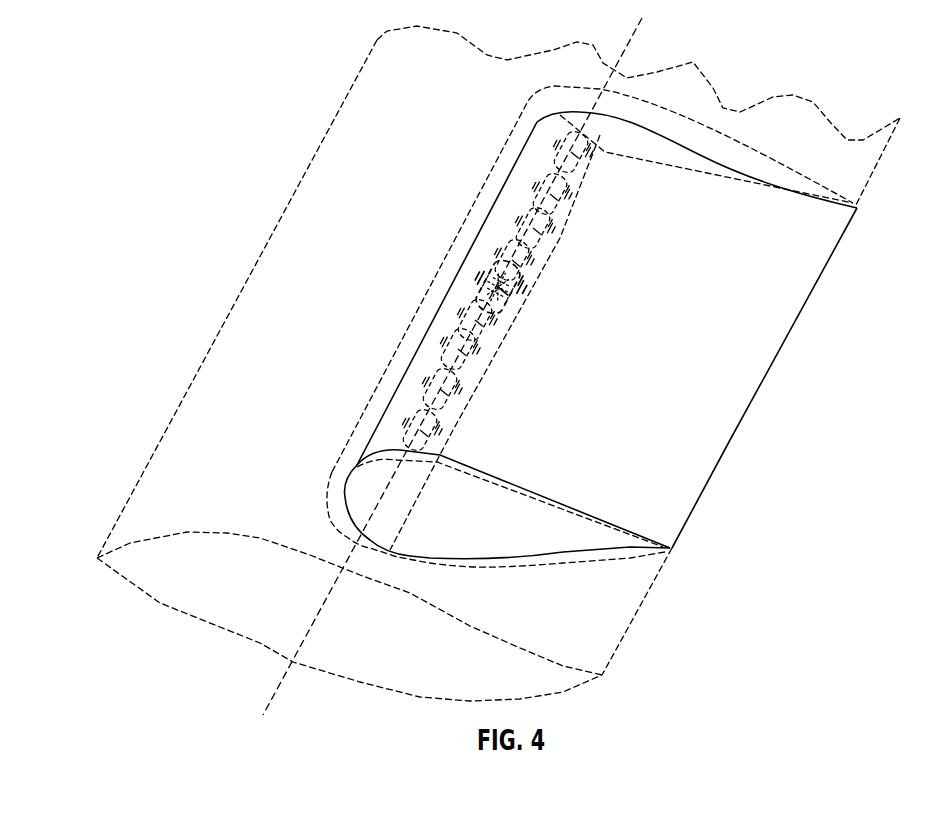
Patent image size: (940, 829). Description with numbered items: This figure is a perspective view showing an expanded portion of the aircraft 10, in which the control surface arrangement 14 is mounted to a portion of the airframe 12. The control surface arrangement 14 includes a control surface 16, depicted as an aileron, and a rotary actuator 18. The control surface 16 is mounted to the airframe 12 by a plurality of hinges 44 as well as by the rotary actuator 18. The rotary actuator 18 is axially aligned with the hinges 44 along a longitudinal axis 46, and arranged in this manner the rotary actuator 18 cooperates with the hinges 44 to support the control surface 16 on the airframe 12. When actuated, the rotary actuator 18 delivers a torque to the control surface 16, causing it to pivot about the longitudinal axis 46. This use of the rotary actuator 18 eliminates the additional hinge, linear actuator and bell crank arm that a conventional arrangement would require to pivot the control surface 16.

The aircraft 10 is at (142, 165).
The airframe 12 is at (200, 369).
The control surface arrangement 14 is at (693, 513).
The control surface 16 is at (733, 402).
The rotary actuator 18 is at (546, 287).
The hinges 44 is at (596, 190).
The longitudinal axis 46 is at (634, 38).